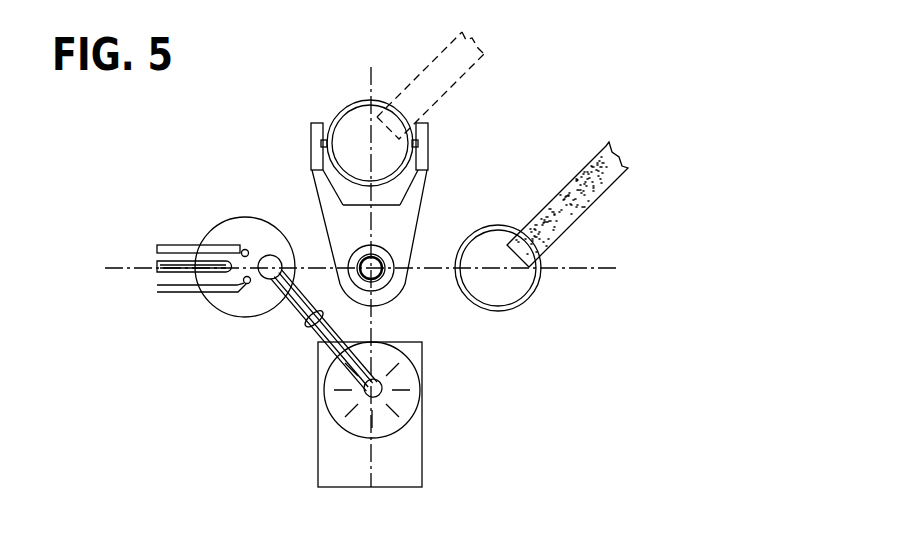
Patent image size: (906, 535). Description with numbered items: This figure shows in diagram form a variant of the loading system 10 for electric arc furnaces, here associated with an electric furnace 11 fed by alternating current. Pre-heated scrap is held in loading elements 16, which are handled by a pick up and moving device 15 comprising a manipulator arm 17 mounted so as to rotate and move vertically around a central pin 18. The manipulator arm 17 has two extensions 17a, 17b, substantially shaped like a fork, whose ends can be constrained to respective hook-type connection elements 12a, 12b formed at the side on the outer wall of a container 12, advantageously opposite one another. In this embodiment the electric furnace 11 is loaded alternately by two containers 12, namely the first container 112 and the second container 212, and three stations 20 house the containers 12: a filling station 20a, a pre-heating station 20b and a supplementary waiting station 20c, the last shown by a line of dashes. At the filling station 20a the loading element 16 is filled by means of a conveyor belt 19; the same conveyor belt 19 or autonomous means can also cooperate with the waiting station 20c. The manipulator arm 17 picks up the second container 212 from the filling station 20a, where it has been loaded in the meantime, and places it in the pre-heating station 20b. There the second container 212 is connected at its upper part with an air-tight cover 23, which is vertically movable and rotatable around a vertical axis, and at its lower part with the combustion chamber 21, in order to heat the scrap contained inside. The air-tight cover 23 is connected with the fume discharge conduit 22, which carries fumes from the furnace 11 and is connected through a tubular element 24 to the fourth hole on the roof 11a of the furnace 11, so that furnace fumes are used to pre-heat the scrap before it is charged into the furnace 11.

The loading system 10 is at (650, 385).
The electric furnace 11 is at (176, 301).
The roof 11a is at (228, 308).
The container 12 is at (403, 219).
The hook-type connection element 12a is at (318, 143).
The hook-type connection element 12b is at (425, 137).
The first container 112 is at (353, 135).
The pick up and moving device 15 is at (387, 310).
The loading element 16 is at (421, 191).
The manipulator arm 17 is at (333, 261).
The extension 17a is at (330, 190).
The extension 17b is at (437, 182).
The central pin 18 is at (419, 315).
The conveyor belt 19 is at (600, 178).
The station 20 is at (523, 252).
The filling station 20a is at (547, 295).
The pre-heating station 20b is at (430, 393).
The waiting station 20c is at (392, 90).
The combustion chamber 21 is at (368, 428).
The fume discharge conduit 22 is at (310, 332).
The air-tight cover 23 is at (337, 402).
The tubular element 24 is at (260, 270).
The second container 212 is at (482, 257).